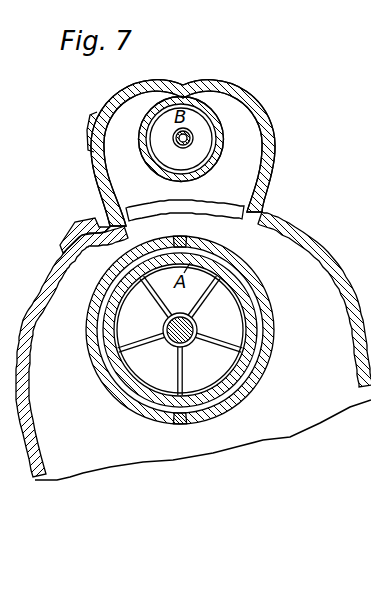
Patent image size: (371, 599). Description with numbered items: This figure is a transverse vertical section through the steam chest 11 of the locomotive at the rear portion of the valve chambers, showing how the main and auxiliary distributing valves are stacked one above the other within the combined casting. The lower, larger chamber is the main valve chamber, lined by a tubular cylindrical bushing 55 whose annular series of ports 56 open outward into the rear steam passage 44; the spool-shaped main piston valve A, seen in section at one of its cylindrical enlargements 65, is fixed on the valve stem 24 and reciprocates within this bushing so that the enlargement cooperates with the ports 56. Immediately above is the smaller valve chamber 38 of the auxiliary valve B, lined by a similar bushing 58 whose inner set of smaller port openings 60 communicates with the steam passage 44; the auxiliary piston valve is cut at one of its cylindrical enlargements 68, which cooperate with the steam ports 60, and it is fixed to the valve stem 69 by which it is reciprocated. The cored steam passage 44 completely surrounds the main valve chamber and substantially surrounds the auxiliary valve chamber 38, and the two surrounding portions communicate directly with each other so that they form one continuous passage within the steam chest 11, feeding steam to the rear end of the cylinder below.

The steam chest 11 is at (50, 265).
The valve stem 24 is at (171, 341).
The valve chamber of the auxiliary valve 38 is at (214, 111).
The rear steam passage 44 is at (275, 237).
The bushing 55 is at (268, 285).
The ports 56 is at (218, 247).
The bushing 58 is at (277, 188).
The port openings 60 is at (147, 141).
The cylindrical enlargement 65 is at (222, 346).
The cylindrical enlargement 68 is at (212, 122).
The valve stem 69 is at (184, 142).